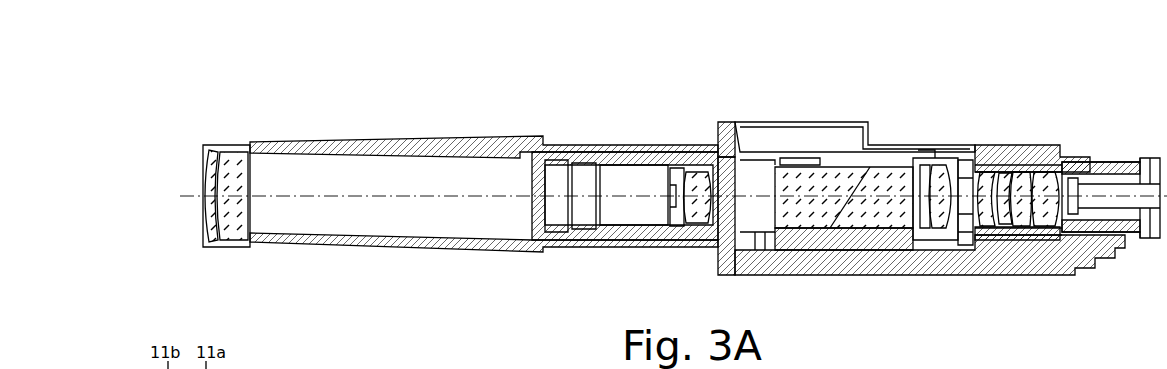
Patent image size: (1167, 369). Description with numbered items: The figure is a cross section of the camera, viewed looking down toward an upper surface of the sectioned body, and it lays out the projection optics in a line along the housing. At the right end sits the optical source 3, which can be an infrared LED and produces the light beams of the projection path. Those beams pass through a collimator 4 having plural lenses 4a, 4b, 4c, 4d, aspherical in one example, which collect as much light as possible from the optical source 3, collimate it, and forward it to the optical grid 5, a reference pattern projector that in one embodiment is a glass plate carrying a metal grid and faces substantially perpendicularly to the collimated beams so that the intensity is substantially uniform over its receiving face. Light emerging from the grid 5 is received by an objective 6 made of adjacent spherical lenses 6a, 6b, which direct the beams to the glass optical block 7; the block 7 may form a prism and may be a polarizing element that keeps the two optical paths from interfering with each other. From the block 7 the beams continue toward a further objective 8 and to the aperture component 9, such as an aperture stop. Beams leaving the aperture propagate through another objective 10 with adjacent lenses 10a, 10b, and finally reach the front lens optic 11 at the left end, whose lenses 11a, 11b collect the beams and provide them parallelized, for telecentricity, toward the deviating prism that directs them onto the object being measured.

The optical source 3 is at (1082, 162).
The collimator 4 is at (1022, 140).
The collimator lens 4a is at (1047, 172).
The collimator lens 4b is at (1022, 172).
The collimator lens 4c is at (1006, 173).
The collimator lens 4d is at (987, 172).
The optical grid 5 is at (963, 160).
The objective 6 is at (949, 252).
The spherical lens 6a is at (944, 232).
The spherical lens 6b is at (926, 232).
The optical block 7 is at (848, 167).
The objective 8 is at (726, 122).
The aperture component 9 is at (716, 242).
The objective 10 is at (665, 205).
The lens 10a is at (698, 172).
The lens 10b is at (676, 170).
The front lens optic 11 is at (199, 140).
The lens 11a is at (240, 150).
The lens 11b is at (212, 150).